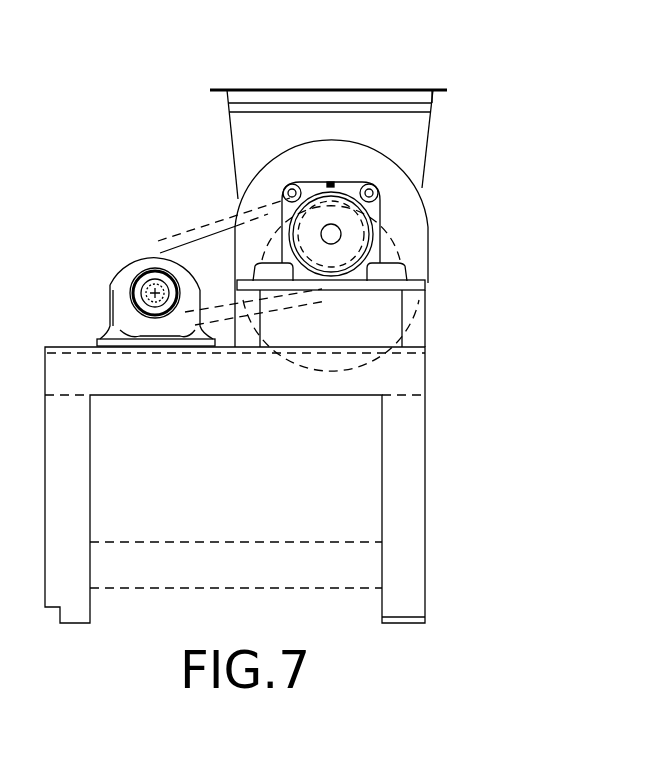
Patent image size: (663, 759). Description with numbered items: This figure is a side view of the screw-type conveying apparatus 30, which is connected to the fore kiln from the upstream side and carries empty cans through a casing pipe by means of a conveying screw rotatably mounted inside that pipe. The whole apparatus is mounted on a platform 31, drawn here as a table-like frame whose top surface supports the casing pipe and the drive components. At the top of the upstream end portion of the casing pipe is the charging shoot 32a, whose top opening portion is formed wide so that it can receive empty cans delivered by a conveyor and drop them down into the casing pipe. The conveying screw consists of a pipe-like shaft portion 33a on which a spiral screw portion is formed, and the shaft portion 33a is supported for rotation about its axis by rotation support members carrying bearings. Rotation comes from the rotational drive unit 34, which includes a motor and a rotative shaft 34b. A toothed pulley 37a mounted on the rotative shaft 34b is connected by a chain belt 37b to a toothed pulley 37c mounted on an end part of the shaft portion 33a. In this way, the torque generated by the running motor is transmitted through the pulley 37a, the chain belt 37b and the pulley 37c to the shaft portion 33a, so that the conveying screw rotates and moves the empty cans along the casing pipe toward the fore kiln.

The screw-type conveying apparatus 30 is at (525, 50).
The platform 31 is at (425, 480).
The charging shoot 32a is at (413, 90).
The shaft portion 33a is at (341, 234).
The rotational drive unit 34 is at (108, 276).
The rotative shaft 34b is at (154, 289).
The toothed pulley 37a is at (112, 307).
The chain belt 37b is at (208, 220).
The toothed pulley 37c is at (347, 249).